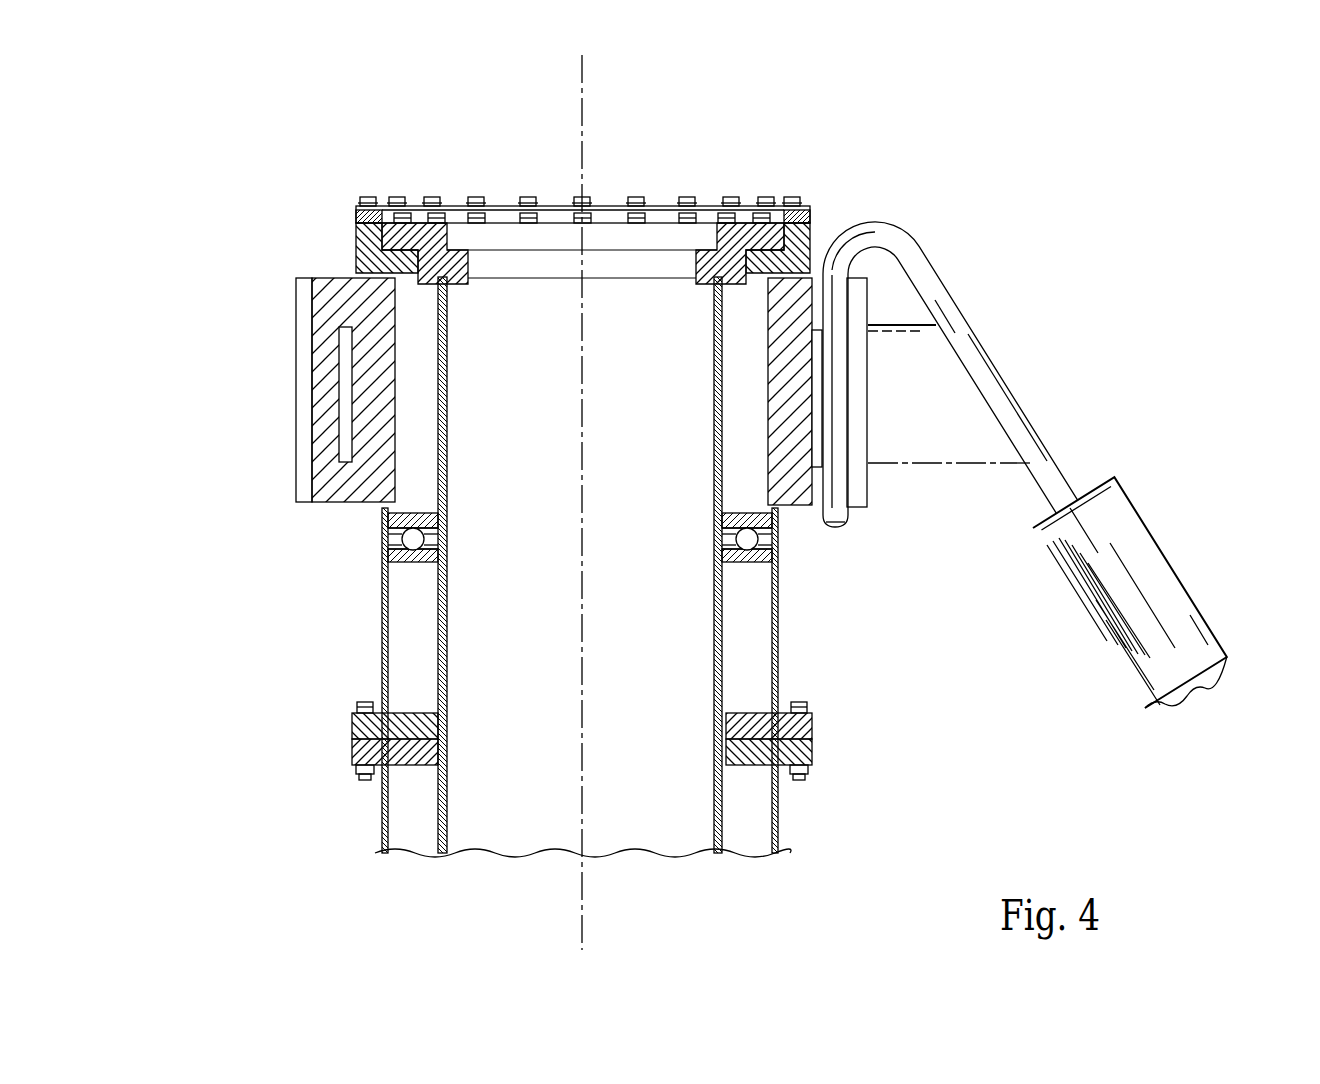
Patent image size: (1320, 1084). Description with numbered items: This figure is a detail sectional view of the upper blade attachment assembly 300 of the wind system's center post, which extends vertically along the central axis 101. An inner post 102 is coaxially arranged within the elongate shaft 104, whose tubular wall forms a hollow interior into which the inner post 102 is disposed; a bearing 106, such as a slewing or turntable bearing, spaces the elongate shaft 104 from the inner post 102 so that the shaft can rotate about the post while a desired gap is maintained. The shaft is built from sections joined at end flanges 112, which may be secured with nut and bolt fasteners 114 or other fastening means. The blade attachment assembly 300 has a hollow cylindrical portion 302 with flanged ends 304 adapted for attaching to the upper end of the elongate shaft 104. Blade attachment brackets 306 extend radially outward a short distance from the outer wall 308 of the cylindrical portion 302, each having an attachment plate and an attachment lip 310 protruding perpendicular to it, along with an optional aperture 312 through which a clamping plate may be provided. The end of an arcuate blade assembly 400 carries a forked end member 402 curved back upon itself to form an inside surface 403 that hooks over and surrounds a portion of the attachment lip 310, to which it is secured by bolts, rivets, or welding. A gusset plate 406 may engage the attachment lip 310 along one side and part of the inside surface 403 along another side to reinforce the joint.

The central axis 101 is at (582, 106).
The inner post 102 is at (438, 812).
The elongate shaft 104 is at (778, 657).
The bearing 106 is at (380, 512).
The end flange 112 is at (350, 730).
The bolt 114 is at (370, 705).
The blade attachment assembly 300 is at (607, 403).
The hollow cylindrical portion 302 is at (408, 645).
The flanged end 304 is at (356, 215).
The blade attachment bracket 306 is at (275, 320).
The outer wall 308 is at (330, 287).
The attachment lip 310 is at (302, 462).
The aperture 312 is at (340, 395).
The blade assembly 400 is at (1163, 516).
The forked end member 402 is at (923, 250).
The inside surface 403 is at (852, 515).
The gusset plate 406 is at (936, 393).